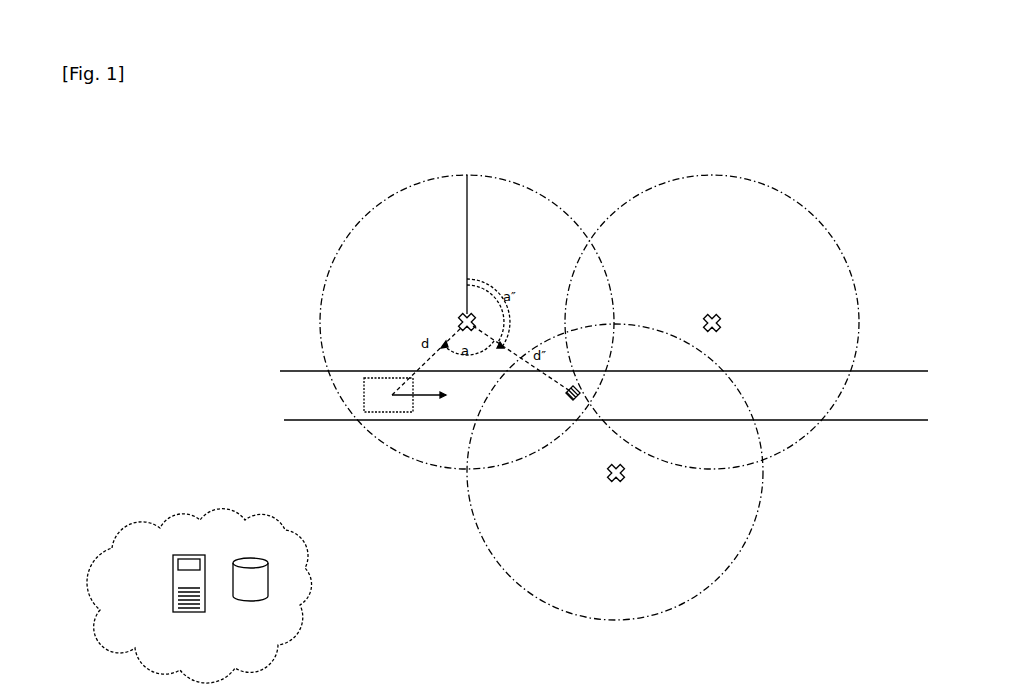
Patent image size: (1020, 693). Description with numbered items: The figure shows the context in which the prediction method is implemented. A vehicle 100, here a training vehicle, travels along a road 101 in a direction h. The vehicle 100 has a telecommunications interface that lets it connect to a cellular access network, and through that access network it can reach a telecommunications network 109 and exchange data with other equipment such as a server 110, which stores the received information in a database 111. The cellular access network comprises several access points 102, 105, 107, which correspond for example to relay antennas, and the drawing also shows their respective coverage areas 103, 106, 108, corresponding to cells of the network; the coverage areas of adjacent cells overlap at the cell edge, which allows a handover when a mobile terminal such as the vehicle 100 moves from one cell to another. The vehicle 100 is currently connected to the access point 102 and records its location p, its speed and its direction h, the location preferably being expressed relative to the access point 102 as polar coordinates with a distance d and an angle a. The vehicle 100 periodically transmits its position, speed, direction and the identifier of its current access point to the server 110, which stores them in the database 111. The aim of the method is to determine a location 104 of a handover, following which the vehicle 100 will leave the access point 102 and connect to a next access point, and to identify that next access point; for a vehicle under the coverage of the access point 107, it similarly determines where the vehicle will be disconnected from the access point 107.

The vehicle 100 is at (395, 377).
The road 101 is at (300, 384).
The access point 102 is at (456, 314).
The coverage area 103 is at (458, 175).
The location of a handover 104 is at (571, 400).
The access point 105 is at (608, 482).
The coverage area 106 is at (500, 566).
The access point 107 is at (705, 314).
The coverage area 108 is at (678, 178).
The telecommunications network 109 is at (133, 521).
The server 110 is at (173, 590).
The database 111 is at (260, 600).